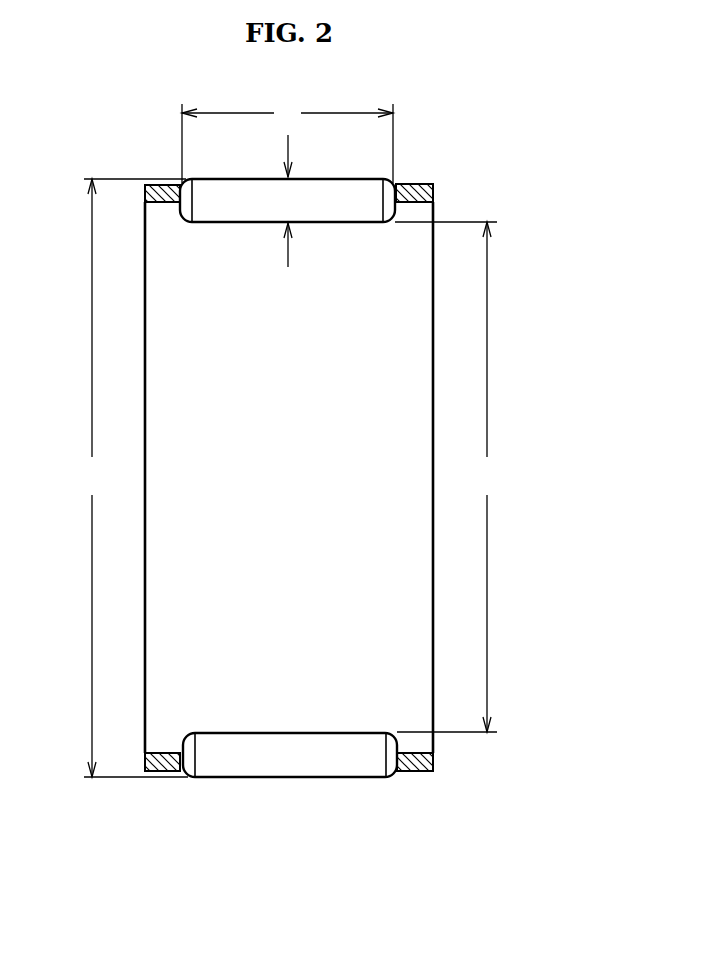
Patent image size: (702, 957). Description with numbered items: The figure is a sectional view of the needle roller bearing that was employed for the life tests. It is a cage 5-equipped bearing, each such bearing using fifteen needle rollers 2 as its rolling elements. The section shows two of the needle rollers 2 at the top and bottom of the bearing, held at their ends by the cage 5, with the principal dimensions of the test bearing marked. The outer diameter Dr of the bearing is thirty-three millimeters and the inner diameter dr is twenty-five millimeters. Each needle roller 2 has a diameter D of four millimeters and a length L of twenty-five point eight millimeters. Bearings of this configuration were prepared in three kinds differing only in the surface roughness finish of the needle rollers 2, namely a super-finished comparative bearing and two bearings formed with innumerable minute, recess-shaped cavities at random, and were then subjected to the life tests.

The needle rollers 2 is at (298, 745).
The cage 5 is at (417, 183).
The length L is at (287, 141).
The diameter of needle rollers D is at (293, 202).
The outer diameter Dr is at (133, 478).
The inner diameter dr is at (447, 477).